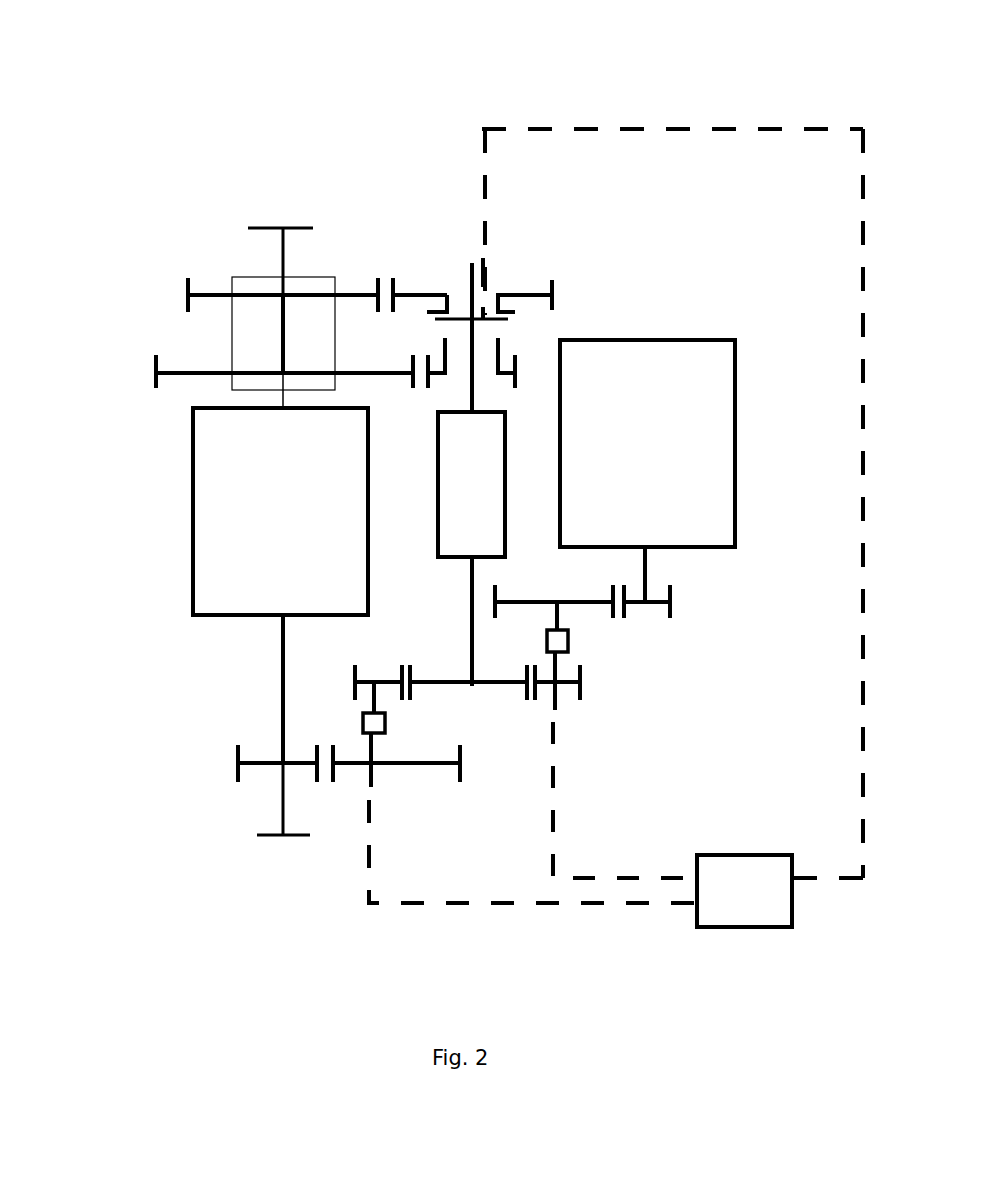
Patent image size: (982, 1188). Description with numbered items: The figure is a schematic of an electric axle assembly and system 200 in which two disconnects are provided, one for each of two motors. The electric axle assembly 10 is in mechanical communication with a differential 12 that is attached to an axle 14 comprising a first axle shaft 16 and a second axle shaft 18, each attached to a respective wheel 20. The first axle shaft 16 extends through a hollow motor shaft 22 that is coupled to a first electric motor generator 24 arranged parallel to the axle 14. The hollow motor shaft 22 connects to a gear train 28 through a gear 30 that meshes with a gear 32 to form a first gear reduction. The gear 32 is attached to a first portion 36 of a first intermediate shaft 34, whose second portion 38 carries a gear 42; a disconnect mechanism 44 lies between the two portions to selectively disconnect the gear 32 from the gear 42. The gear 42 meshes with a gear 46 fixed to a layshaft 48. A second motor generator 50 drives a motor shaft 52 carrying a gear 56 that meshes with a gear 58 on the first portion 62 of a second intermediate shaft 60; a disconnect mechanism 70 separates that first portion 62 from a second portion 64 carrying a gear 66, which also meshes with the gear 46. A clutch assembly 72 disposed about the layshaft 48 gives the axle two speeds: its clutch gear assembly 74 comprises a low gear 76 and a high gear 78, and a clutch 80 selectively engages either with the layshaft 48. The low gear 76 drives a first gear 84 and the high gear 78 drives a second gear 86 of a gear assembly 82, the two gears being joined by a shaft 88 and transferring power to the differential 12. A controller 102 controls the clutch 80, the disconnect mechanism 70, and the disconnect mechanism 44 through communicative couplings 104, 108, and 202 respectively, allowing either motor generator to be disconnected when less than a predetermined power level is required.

The electric axle assembly 10 is at (626, 278).
The differential 12 is at (232, 343).
The axle 14 is at (256, 258).
The first axle shaft 16 is at (283, 819).
The second axle shaft 18 is at (290, 250).
The wheel 20 is at (313, 228).
The hollow motor shaft 22 is at (283, 680).
The electric motor generator 24 is at (193, 532).
The gear train 28 is at (566, 766).
The gear 30 is at (238, 773).
The gear 32 is at (460, 775).
The first intermediate shaft 34 is at (354, 737).
The first portion 36 is at (376, 749).
The second portion 38 is at (378, 701).
The gear 42 is at (356, 668).
The disconnect mechanism 44 is at (386, 725).
The gear 46 is at (456, 677).
The layshaft 48 is at (472, 612).
The motor generator 50 is at (735, 447).
The motor shaft 52 is at (650, 570).
The gear 56 is at (672, 612).
The gear 58 is at (580, 601).
The intermediate shaft 60 is at (592, 649).
The first portion 62 is at (556, 616).
The second portion 64 is at (558, 666).
The gear 66 is at (582, 695).
The disconnect mechanism 70 is at (568, 641).
The clutch assembly 72 is at (528, 273).
The clutch gear assembly 74 is at (444, 345).
The low gear 76 is at (516, 390).
The high gear 78 is at (553, 310).
The clutch 80 is at (508, 322).
The gear assembly 82 is at (164, 287).
The first gear 84 is at (178, 375).
The second gear 86 is at (379, 290).
The shaft 88 is at (287, 340).
The controller 102 is at (744, 891).
The communicative coupling 104 is at (530, 127).
The communicative coupling 108 is at (551, 879).
The electric axle assembly and system 200 is at (736, 110).
The communicative coupling 202 is at (366, 866).